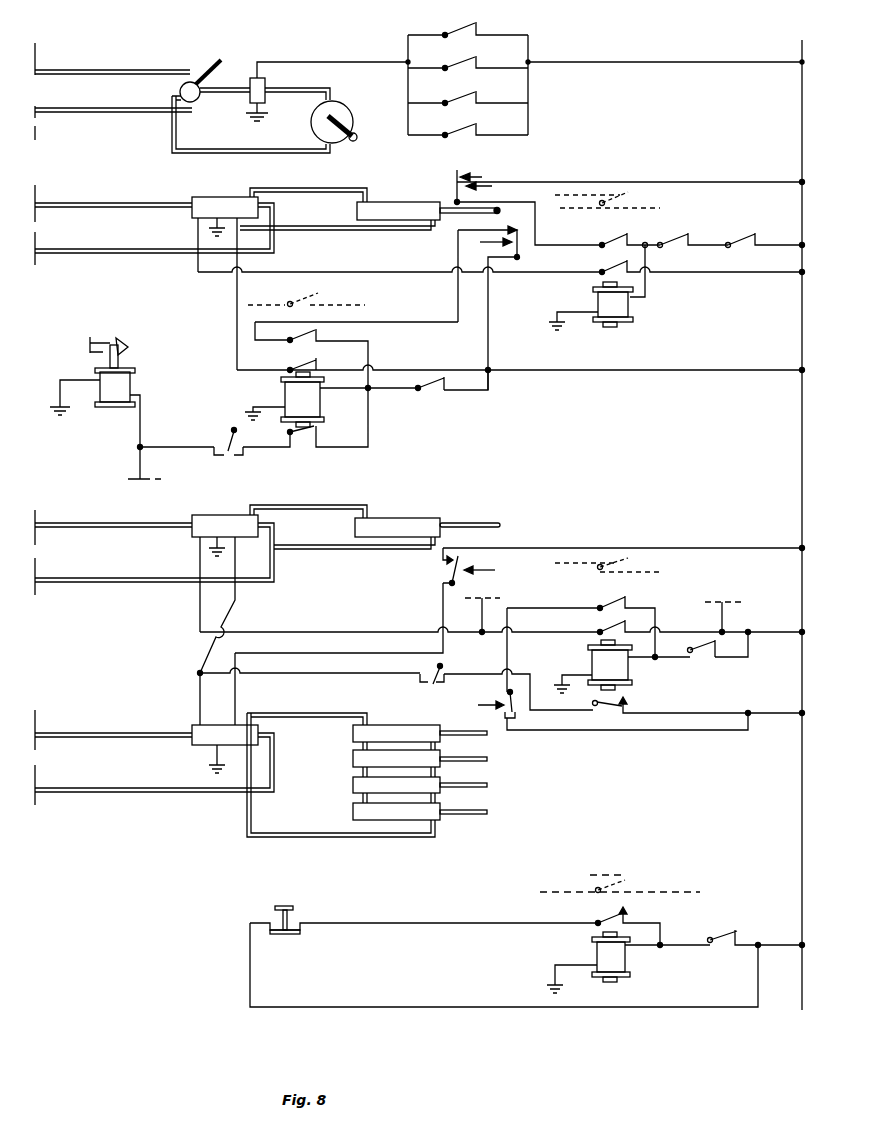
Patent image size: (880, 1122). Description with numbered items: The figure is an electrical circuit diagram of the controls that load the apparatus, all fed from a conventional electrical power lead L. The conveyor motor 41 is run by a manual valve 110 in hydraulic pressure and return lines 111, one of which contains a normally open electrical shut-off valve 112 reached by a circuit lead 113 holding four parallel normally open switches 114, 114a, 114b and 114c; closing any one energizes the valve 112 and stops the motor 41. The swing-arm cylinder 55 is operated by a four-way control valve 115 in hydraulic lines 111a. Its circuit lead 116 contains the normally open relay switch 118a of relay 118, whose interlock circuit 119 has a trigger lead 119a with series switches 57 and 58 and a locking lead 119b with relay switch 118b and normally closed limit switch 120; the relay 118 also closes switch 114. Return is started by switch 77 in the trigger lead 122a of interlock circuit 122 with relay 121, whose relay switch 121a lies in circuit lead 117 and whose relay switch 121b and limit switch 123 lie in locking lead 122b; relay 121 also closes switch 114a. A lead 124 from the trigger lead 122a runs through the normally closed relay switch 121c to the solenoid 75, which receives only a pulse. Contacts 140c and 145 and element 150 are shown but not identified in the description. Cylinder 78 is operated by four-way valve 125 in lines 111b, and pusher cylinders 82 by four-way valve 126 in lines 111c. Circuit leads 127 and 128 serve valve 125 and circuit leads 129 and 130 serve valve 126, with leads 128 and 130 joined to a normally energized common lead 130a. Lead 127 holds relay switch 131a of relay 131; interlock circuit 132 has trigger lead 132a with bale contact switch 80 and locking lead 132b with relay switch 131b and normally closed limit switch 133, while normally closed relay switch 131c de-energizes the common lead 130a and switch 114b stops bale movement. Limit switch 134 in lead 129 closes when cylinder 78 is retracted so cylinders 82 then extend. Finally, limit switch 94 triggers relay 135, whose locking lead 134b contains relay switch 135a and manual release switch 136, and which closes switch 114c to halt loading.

The electrical power lead L is at (802, 100).
The hydraulic pressure and return lines 111 is at (110, 74).
The manual valve 110 is at (182, 88).
The electrical shut-off valve 112 is at (264, 90).
The circuit lead 113 is at (333, 58).
The conveyor motor 41 is at (338, 112).
The switch 114 is at (458, 28).
The switch 114a is at (462, 63).
The switch 114b is at (462, 98).
The switch 114c is at (462, 131).
The hydraulic pressure and return lines 111a is at (112, 207).
The four-way control valve 115 is at (212, 196).
The cylinder 55 is at (389, 200).
The limit switch 120 is at (455, 182).
The locking lead 119b is at (703, 180).
The relay switch 118b is at (602, 240).
The interlock circuit 119 is at (646, 250).
The switch 57 is at (682, 234).
The switch 58 is at (742, 234).
The trigger lead 119a is at (712, 250).
The circuit lead 116 is at (375, 270).
The relay switch 118a is at (600, 266).
The relay 118 is at (627, 306).
The locking lead 122b is at (425, 323).
The limit switch 123 is at (515, 263).
The circuit lead 117 is at (237, 338).
The relay switch 121b is at (310, 338).
The relay switch 121a is at (287, 364).
The relay 121 is at (285, 398).
The interlock circuit 122 is at (363, 392).
The switch 77 is at (433, 393).
The trigger lead 122a is at (486, 392).
The relay switch 121c is at (308, 447).
The switch contact 140c is at (430, 681).
The lead 124 is at (188, 446).
The solenoid 75 is at (116, 408).
The ground connection 150 is at (136, 466).
The hydraulic pressure and return lines 111b is at (112, 527).
The four-way valve 125 is at (212, 514).
The cylinder 78 is at (408, 524).
The circuit lead 127 is at (198, 595).
The circuit lead 128 is at (238, 594).
The circuit lead 129 is at (236, 694).
The common lead 130a is at (365, 675).
The limit switch 134 is at (440, 580).
The pressure switch 145 is at (478, 614).
The relay switch 131b is at (598, 602).
The relay switch 131a is at (598, 628).
The bale contact switch 80 is at (703, 644).
The interlock circuit 132 is at (656, 660).
The trigger lead 132a is at (742, 660).
The relay 131 is at (628, 671).
The limit switch 133 is at (507, 691).
The locking lead 132b is at (706, 730).
The relay switch 131c is at (610, 716).
The circuit lead 130 is at (195, 724).
The four-way valve 126 is at (209, 744).
The hydraulic pressure and return lines 111c is at (112, 737).
The pusher cylinders 82 is at (352, 811).
The locking lead 134b is at (450, 922).
The manual release switch 136 is at (293, 924).
The relay switch 135a is at (596, 920).
The relay 135 is at (600, 956).
The limit switch 94 is at (724, 930).